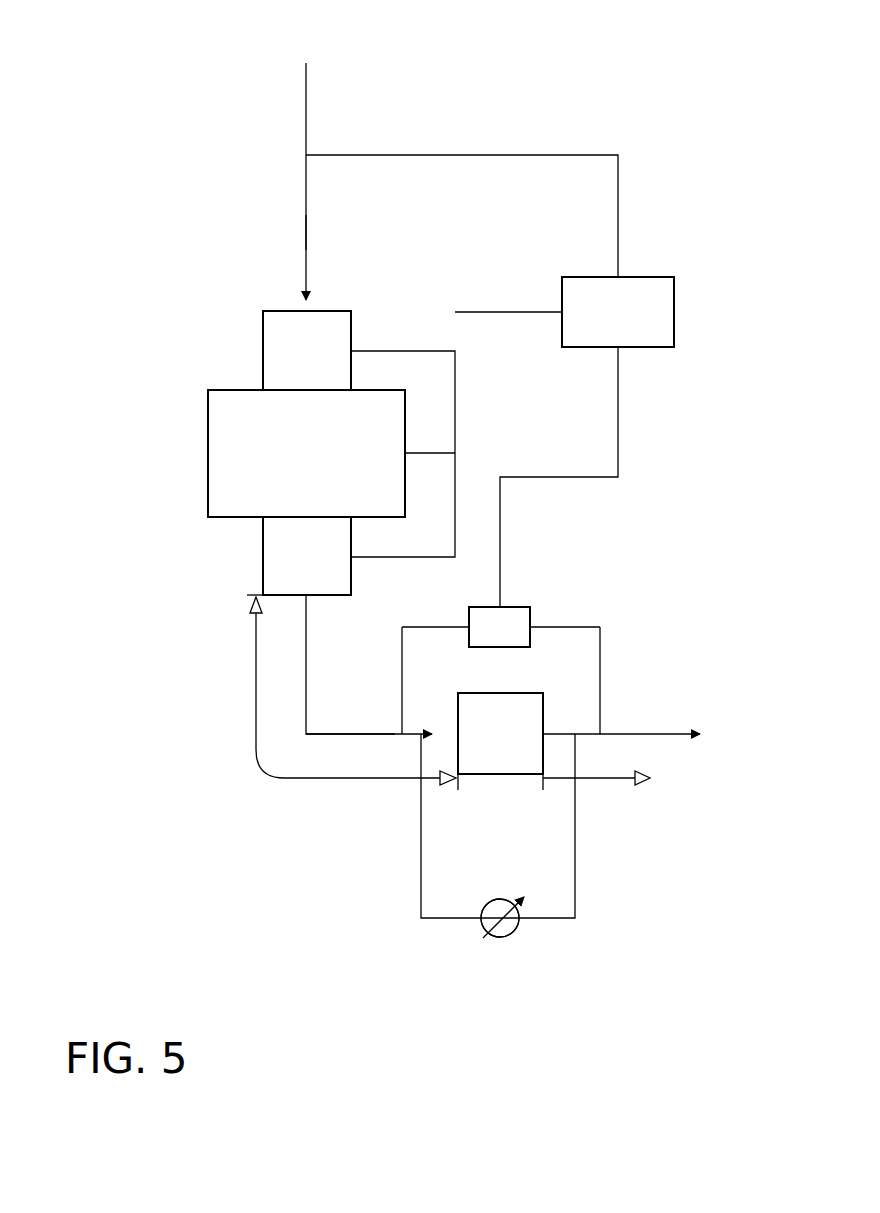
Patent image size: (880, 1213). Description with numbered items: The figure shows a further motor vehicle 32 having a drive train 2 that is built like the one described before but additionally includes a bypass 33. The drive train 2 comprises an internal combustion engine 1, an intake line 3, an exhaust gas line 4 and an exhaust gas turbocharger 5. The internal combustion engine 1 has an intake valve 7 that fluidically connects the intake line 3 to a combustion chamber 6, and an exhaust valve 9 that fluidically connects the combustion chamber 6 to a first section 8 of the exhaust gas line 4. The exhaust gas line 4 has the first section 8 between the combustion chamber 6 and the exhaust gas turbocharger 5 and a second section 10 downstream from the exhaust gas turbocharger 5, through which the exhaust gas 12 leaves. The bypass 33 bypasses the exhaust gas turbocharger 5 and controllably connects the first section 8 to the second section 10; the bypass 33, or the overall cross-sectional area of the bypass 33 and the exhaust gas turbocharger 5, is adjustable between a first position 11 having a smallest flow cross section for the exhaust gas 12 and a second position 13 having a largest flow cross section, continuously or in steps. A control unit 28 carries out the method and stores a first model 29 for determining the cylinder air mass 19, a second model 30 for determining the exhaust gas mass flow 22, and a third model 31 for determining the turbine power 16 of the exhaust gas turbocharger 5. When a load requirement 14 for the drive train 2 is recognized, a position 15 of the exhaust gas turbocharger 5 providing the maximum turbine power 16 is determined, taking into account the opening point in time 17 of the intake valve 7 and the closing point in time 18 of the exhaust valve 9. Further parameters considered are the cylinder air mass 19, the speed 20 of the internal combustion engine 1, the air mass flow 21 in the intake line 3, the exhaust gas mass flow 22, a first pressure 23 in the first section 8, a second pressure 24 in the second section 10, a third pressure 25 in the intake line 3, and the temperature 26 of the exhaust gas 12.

The internal combustion engine 1 is at (366, 246).
The drive train 2 is at (220, 478).
The intake line 3 is at (306, 89).
The exhaust gas line 4 is at (371, 734).
The exhaust gas turbocharger 5 is at (510, 753).
The combustion chamber 6 is at (285, 462).
The intake valve 7 is at (270, 352).
The first section 8 is at (256, 667).
The exhaust valve 9 is at (285, 554).
The second section 10 is at (591, 778).
The first position 11 is at (495, 937).
The exhaust gas 12 is at (683, 734).
The second position 13 is at (507, 927).
The load requirement 14 is at (220, 420).
The position 15 is at (514, 921).
The turbine power 16 is at (506, 713).
The opening point in time 17 is at (336, 340).
The closing point in time 18 is at (335, 550).
The cylinder air mass 19 is at (220, 449).
The speed 20 is at (220, 400).
The air mass flow 21 is at (306, 193).
The exhaust gas mass flow 22 is at (306, 696).
The first pressure 23 is at (402, 734).
The second pressure 24 is at (598, 734).
The third pressure 25 is at (306, 232).
The temperature 26 is at (328, 734).
The control unit 28 is at (640, 287).
The first model 29 is at (220, 504).
The second model 30 is at (287, 483).
The third model 31 is at (642, 336).
The motor vehicle 32 is at (636, 97).
The bypass 33 is at (450, 918).